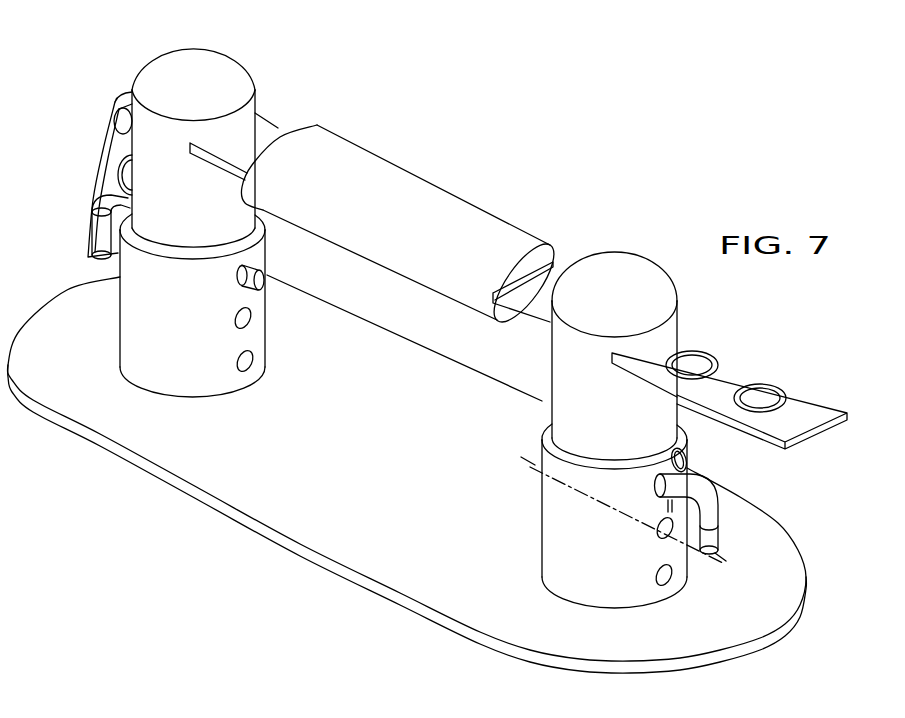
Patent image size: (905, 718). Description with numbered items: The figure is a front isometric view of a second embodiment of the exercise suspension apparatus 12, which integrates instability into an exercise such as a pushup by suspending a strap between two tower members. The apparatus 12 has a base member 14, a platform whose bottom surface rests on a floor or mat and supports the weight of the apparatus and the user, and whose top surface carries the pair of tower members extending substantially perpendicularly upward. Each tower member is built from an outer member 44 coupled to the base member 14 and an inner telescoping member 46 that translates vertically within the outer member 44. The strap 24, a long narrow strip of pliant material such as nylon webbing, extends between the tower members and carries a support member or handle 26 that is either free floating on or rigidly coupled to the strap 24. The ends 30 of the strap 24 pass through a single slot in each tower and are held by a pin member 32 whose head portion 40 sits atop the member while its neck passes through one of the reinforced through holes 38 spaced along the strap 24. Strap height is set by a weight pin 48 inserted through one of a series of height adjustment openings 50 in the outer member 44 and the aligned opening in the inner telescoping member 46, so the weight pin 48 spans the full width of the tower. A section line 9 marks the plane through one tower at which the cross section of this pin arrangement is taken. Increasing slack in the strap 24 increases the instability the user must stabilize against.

The exercise suspension apparatus 12 is at (624, 68).
The base member 14 is at (369, 444).
The strap 24 is at (281, 109).
The handle 26 is at (376, 217).
The ends 30 is at (88, 264).
The pin member 32 is at (132, 31).
The through holes 38 is at (120, 161).
The head portion 40 is at (179, 88).
The outer member 44 is at (169, 330).
The inner telescoping member 46 is at (179, 200).
The weight pin 48 is at (98, 238).
The height adjustment openings 50 is at (272, 291).
The section line 9- 9 is at (528, 463).